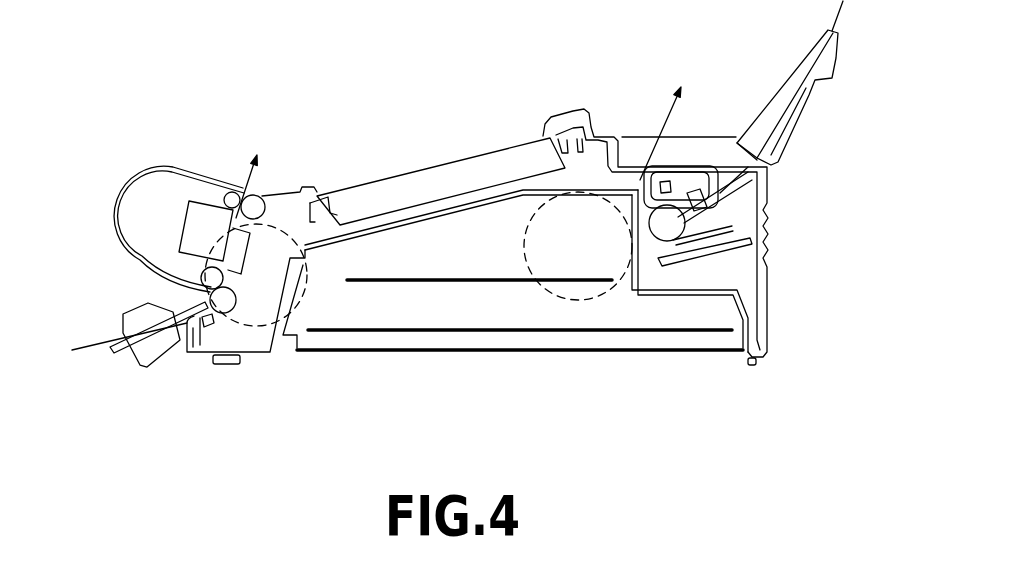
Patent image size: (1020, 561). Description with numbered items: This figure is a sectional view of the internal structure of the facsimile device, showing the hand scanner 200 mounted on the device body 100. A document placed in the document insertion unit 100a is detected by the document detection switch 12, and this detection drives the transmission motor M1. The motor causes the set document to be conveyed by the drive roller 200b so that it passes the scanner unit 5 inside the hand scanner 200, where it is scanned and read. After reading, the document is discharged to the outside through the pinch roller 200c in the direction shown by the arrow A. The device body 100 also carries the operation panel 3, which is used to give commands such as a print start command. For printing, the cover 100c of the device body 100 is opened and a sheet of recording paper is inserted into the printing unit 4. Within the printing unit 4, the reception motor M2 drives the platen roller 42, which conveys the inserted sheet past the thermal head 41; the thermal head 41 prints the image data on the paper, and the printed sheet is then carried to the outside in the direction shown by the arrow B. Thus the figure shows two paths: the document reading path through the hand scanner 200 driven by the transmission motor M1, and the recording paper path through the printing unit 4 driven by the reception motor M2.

The operation panel 3 is at (495, 150).
The printing unit 4 is at (722, 140).
The scanner unit 5 is at (201, 202).
The document detection switch 12 is at (197, 358).
The thermal head 41 is at (698, 262).
The platen roller 42 is at (676, 197).
The device body 100 is at (651, 367).
The document insertion unit 100a is at (107, 343).
The cover 100c is at (813, 93).
The hand scanner 200 is at (133, 172).
The drive roller 200b is at (173, 283).
The pinch roller 200c is at (227, 188).
The transmission motor M1 is at (300, 300).
The reception motor M2 is at (570, 298).
The arrow A is at (260, 176).
The arrow B is at (667, 114).